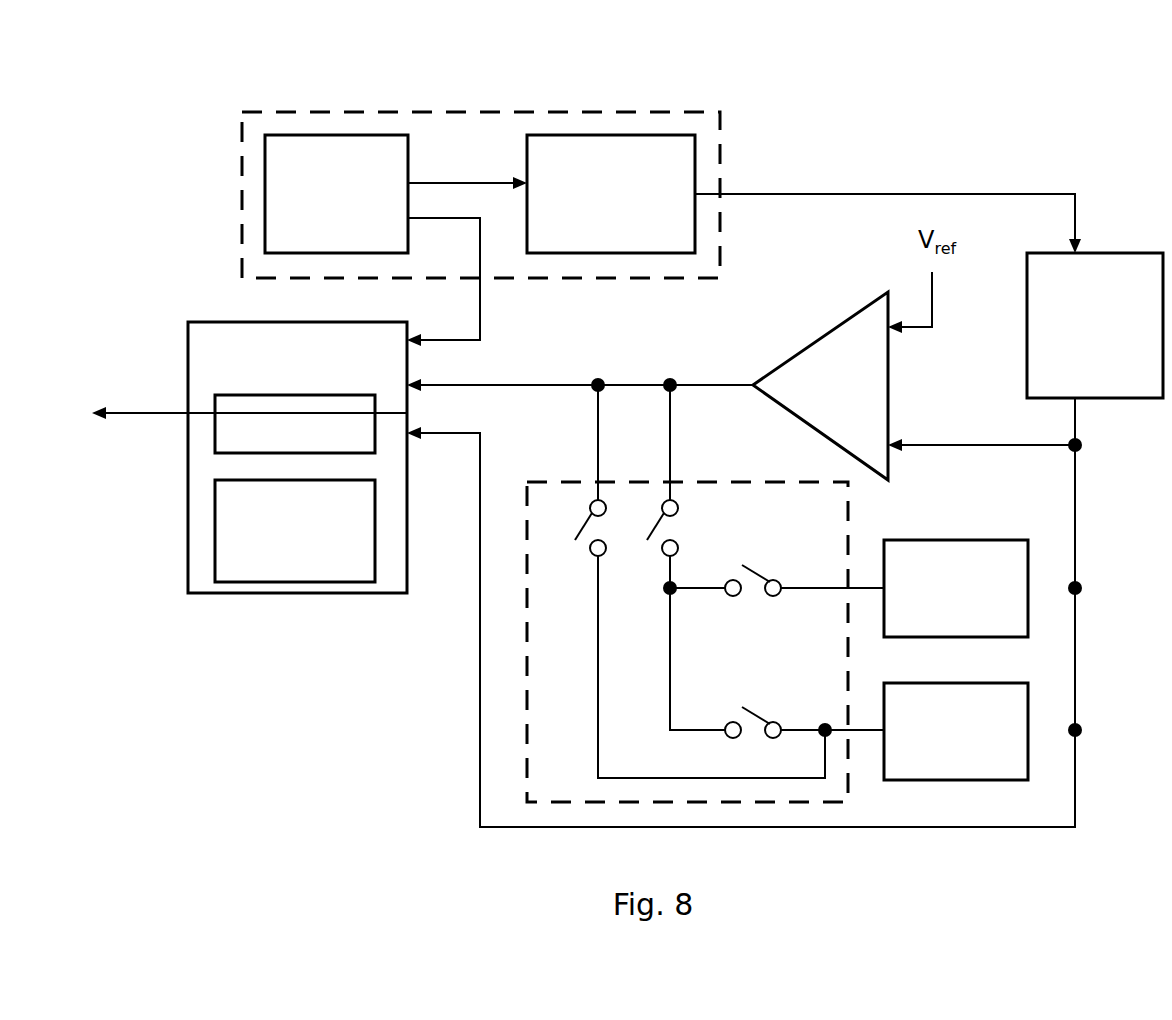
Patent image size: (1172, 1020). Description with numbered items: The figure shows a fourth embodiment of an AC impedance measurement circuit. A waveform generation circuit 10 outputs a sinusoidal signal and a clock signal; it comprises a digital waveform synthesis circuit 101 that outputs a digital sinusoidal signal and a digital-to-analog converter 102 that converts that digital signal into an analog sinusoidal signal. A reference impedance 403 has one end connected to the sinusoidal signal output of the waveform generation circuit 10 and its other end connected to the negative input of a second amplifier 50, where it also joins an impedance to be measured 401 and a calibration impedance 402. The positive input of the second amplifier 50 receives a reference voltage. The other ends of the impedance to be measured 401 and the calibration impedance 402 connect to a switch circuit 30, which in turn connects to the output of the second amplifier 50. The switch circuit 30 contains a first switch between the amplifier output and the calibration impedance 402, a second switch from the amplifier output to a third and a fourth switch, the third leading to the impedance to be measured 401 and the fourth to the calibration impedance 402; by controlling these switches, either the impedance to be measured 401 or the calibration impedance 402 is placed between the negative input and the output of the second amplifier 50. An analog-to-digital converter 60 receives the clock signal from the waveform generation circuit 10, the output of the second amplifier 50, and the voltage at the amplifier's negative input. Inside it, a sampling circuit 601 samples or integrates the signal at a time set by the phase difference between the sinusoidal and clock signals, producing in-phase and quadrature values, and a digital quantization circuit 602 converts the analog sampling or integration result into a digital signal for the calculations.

The waveform generation circuit 10 is at (480, 113).
The digital waveform synthesis circuit 101 is at (293, 145).
The digital-to-analog converter 102 is at (597, 143).
The switch circuit 30 is at (528, 725).
The second amplifier 50 is at (840, 335).
The analog-to-digital converter 60 is at (203, 367).
The sampling circuit 601 is at (238, 413).
The digital quantization circuit 602 is at (232, 527).
The impedance to be measured 401 is at (956, 588).
The calibration impedance 402 is at (956, 731).
The reference impedance 403 is at (1095, 325).